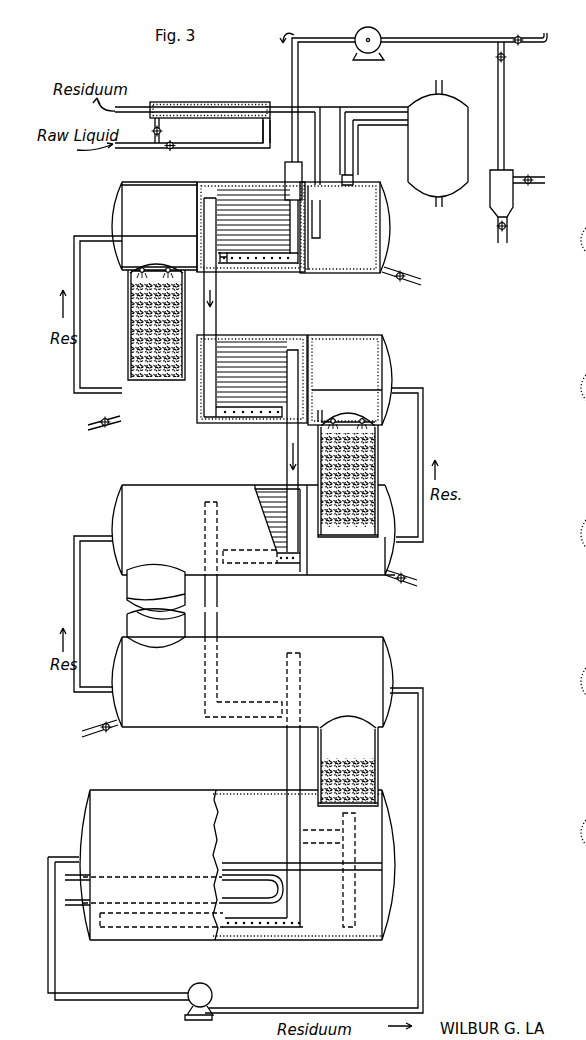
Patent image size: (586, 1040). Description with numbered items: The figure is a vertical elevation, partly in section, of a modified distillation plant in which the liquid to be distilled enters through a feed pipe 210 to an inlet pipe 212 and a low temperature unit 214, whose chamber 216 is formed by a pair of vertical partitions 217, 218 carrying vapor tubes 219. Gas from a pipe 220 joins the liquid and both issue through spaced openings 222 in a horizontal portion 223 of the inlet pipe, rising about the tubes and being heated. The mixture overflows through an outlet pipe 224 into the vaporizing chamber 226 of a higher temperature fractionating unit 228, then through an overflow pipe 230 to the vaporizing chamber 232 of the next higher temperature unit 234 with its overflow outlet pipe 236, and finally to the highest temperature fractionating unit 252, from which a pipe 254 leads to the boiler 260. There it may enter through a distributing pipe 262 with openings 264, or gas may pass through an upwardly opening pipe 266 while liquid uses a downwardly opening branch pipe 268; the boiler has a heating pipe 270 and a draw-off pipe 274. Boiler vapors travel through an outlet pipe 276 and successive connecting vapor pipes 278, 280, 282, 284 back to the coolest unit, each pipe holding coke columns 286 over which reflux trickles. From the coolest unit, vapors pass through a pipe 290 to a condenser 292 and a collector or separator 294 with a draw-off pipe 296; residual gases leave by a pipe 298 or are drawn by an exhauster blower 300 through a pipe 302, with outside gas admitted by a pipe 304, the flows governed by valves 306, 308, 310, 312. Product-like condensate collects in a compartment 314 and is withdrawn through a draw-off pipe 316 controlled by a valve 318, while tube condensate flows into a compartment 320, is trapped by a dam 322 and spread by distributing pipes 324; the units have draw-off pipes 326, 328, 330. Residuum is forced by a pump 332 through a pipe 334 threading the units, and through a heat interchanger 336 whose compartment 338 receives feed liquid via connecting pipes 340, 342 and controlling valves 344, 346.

The feed pipe 210 is at (133, 146).
The inlet pipe 212 is at (288, 178).
The low temperature unit 214 is at (393, 237).
The chamber 216 is at (303, 272).
The vertical partition 217 is at (196, 221).
The vertical partition 218 is at (309, 259).
The vapor tubes 219 is at (210, 190).
The pipe 220 is at (299, 83).
The spaced openings 222 is at (267, 262).
The horizontal portion 223 is at (226, 257).
The outlet pipe 224 is at (215, 318).
The vaporizing chamber 226 is at (272, 336).
The higher temperature fractionating unit 228 is at (357, 334).
The overflow pipe 230 is at (287, 442).
The vaporizing chamber 232 is at (272, 487).
The next higher temperature unit 234 is at (173, 487).
The overflow outlet pipe 236 is at (218, 588).
The highest temperature fractionating unit 252 is at (322, 646).
The pipe 254 is at (287, 743).
The boiler 260 is at (133, 797).
The distributing pipe 262 is at (276, 929).
The openings 264 is at (250, 929).
The upwardly opening pipe 266 is at (343, 819).
The downwardly opening branch pipe 268 is at (346, 898).
The heating pipe 270 is at (158, 876).
The draw-off pipe 274 is at (67, 832).
The outlet pipe 276 is at (367, 746).
The connecting vapor pipe 278 is at (137, 626).
The connecting vapor pipe 280 is at (132, 585).
The connecting vapor pipe 282 is at (379, 441).
The connecting vapor pipe 284 is at (128, 290).
The coke columns 286 is at (129, 317).
The pipe 290 is at (353, 154).
The condenser 292 is at (391, 143).
The collector or separator 294 is at (514, 199).
The draw-off pipe 296 is at (509, 244).
The pipe 298 is at (544, 177).
The exhauster blower 300 is at (370, 27).
The pipe 302 is at (505, 104).
The pipe 304 is at (537, 37).
The valve 306 is at (507, 226).
The valve 308 is at (525, 176).
The valve 310 is at (506, 57).
The valve 312 is at (514, 36).
The compartment 314 is at (371, 214).
The draw-off pipe 316 is at (417, 285).
The valve 318 is at (405, 272).
The compartment 320 is at (131, 203).
The dam 322 is at (178, 257).
The distributing pipes 324 is at (131, 275).
The draw-off pipe 326 is at (99, 431).
The draw-off pipe 328 is at (405, 585).
The draw-off pipe 330 is at (94, 737).
The pump 332 is at (211, 989).
The pipe 334 is at (424, 944).
The heat interchanger 336 is at (167, 86).
The compartment 338 is at (217, 102).
The connecting pipe 340 is at (152, 131).
The connecting pipe 342 is at (262, 133).
The controlling valve 344 is at (163, 131).
The controlling valve 346 is at (173, 149).